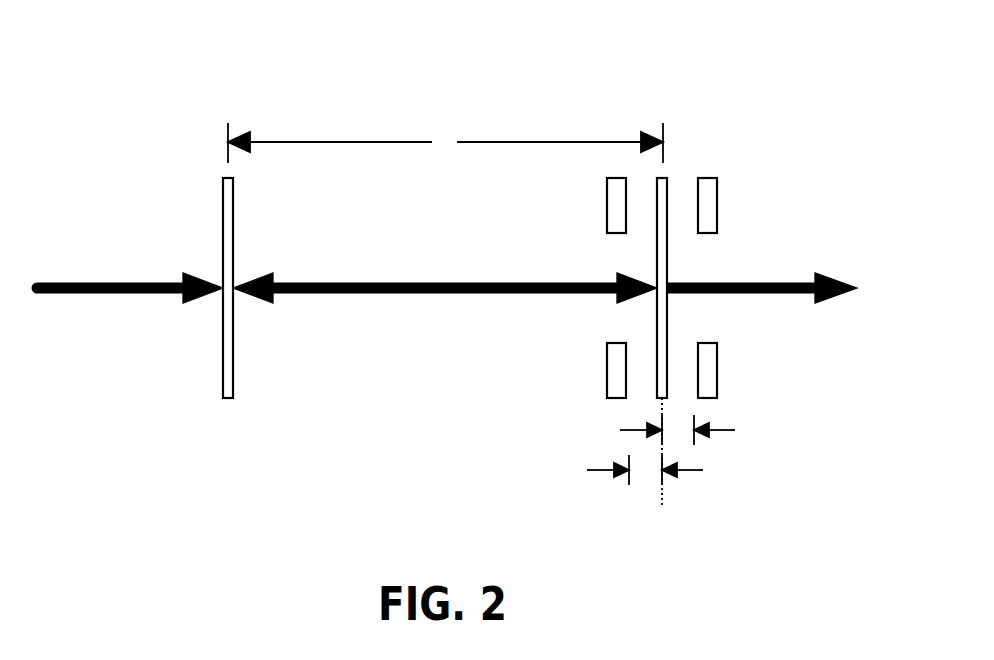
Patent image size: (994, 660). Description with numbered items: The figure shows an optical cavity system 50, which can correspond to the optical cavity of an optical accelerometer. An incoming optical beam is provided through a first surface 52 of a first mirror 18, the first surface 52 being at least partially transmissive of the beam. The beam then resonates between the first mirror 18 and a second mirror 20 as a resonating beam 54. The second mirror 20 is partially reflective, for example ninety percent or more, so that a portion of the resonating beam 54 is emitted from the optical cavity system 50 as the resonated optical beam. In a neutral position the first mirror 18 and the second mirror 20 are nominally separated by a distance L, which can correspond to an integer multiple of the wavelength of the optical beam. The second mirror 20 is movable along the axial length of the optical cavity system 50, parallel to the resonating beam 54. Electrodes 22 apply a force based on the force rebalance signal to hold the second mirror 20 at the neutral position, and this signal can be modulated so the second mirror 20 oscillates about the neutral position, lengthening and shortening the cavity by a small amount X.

The optical cavity system 50 is at (151, 71).
The first mirror 18 is at (223, 178).
The first surface 52 is at (222, 232).
The resonating beam 54 is at (407, 283).
The second mirror 20 is at (667, 178).
The electrodes 22 is at (607, 205).